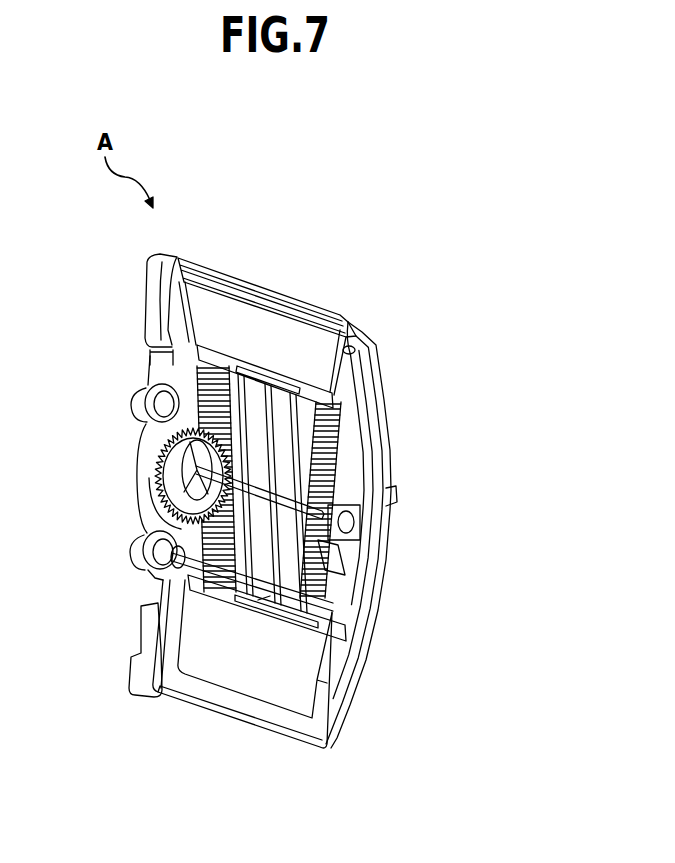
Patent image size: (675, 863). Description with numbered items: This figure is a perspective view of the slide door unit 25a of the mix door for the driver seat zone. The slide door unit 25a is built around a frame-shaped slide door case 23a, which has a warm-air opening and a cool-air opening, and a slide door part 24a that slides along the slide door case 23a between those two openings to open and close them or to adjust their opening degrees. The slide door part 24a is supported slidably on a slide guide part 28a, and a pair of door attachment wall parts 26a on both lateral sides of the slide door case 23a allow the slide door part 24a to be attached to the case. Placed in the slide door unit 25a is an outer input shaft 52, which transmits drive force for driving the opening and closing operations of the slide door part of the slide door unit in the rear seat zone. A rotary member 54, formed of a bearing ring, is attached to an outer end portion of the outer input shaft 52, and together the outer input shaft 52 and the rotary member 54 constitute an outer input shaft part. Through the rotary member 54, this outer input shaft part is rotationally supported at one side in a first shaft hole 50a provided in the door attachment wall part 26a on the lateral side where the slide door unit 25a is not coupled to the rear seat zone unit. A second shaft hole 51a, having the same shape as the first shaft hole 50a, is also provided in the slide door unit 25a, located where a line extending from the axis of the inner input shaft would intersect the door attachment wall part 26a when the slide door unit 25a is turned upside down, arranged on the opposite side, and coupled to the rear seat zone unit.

The slide door case 23a is at (283, 300).
The slide door part 24a is at (283, 422).
The slide door unit 25a is at (203, 709).
The door attachment wall part 26a is at (133, 637).
The slide guide part 28a is at (177, 311).
The first shaft hole 50a is at (133, 550).
The second shaft hole 51a is at (133, 407).
The outer input shaft 52 is at (272, 590).
The rotary member 54 is at (160, 558).